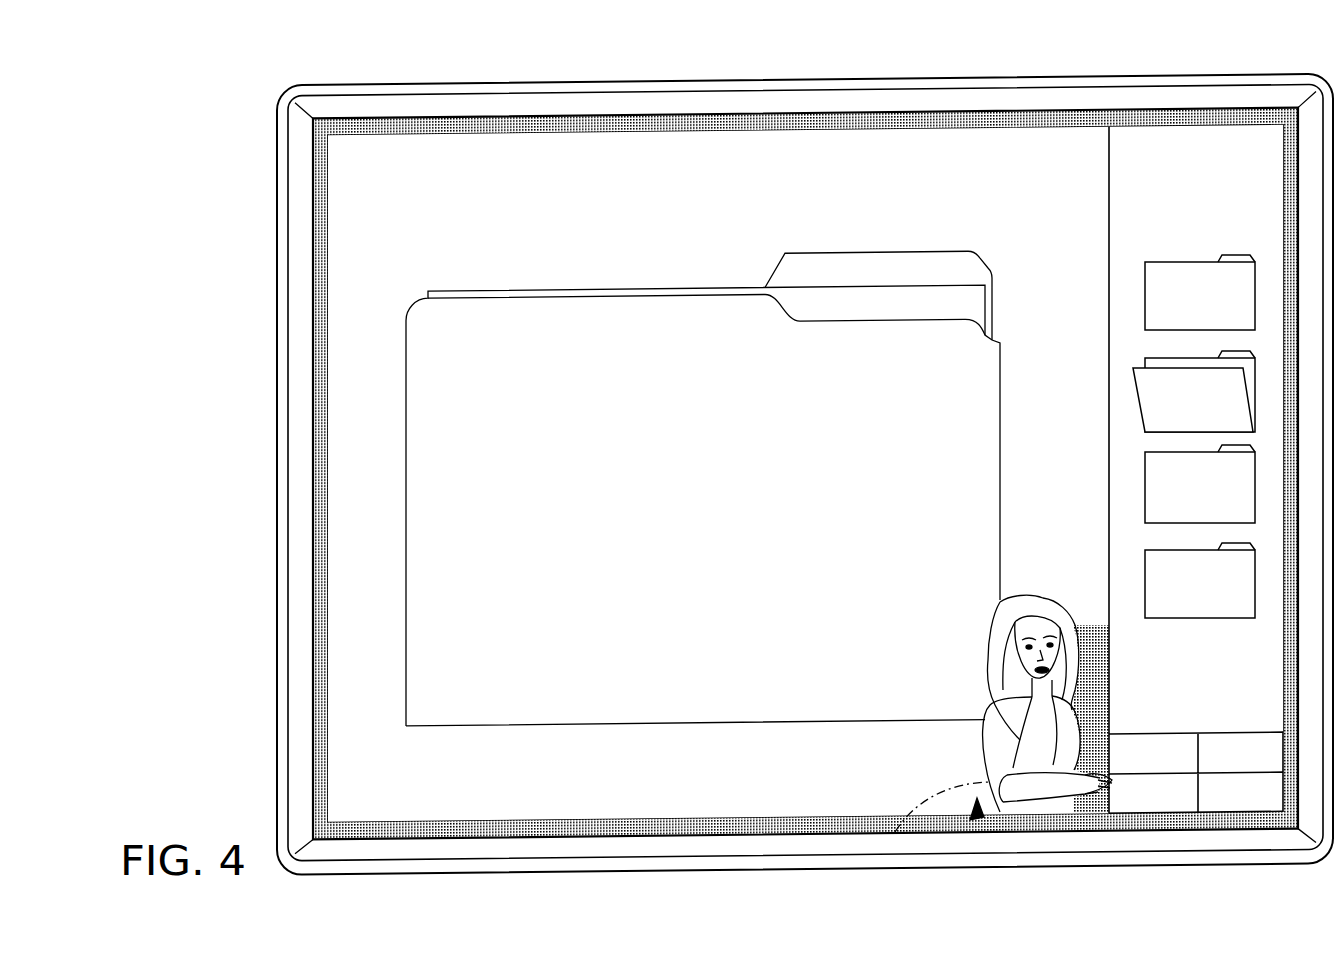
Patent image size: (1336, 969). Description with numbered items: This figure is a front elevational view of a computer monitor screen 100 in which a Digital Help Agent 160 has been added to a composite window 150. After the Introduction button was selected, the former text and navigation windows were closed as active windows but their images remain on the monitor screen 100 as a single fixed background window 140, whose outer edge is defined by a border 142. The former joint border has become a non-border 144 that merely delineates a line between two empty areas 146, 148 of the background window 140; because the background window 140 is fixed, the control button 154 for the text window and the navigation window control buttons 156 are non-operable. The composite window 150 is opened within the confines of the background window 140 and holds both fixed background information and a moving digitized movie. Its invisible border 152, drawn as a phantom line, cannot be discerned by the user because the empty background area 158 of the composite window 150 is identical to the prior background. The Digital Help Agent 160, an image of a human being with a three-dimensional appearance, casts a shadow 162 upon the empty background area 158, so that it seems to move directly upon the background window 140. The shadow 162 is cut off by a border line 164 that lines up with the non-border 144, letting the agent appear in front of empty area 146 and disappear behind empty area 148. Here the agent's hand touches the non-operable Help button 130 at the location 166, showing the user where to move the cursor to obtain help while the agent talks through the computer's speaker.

The monitor screen 100 is at (255, 542).
The Help button 130 is at (1183, 808).
The background window 140 is at (566, 150).
The border 142 is at (1283, 151).
The non-border 144 is at (1105, 140).
The empty area 146 is at (1074, 199).
The empty area 148 is at (1122, 479).
The composite window 150 is at (977, 815).
The invisible border 152 is at (895, 832).
The control button 154 is at (425, 437).
The navigation window control buttons 156 is at (1176, 362).
The empty background area 158 is at (980, 782).
The Digital Help Agent 160 is at (1052, 812).
The shadow 162 is at (1095, 635).
The border line 164 is at (1112, 657).
The location 166 is at (1108, 784).